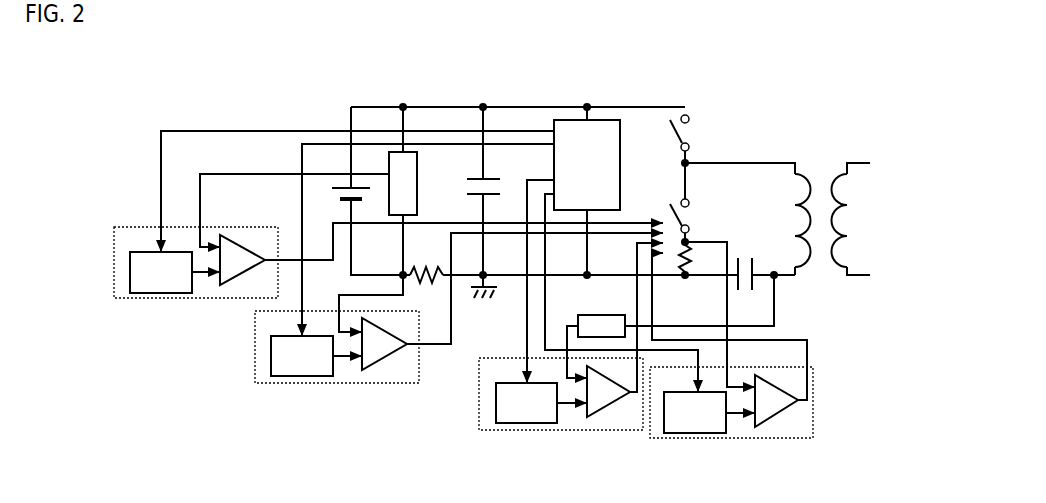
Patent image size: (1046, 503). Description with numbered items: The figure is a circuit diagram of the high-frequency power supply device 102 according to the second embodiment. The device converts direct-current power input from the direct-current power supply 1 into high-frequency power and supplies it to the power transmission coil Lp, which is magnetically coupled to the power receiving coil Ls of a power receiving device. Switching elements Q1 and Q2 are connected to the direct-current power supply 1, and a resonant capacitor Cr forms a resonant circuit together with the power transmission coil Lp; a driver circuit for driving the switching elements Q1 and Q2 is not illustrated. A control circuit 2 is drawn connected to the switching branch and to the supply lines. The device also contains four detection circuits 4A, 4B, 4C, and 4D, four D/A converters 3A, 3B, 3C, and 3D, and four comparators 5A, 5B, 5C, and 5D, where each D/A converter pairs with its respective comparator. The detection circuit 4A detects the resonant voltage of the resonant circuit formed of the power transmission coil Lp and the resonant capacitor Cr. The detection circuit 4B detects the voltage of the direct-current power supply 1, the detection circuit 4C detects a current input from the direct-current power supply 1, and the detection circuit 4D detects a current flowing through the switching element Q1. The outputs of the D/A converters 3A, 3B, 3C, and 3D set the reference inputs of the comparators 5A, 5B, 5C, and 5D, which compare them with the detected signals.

The high-frequency power supply device 102 is at (240, 53).
The direct-current power supply 1 is at (334, 198).
The control circuit 2 is at (620, 160).
The D/A converter 3A is at (527, 424).
The D/A converter 3B is at (130, 272).
The D/A converter 3C is at (271, 356).
The D/A converter 3D is at (695, 434).
The detection circuit 4A is at (596, 315).
The detection circuit 4B is at (418, 171).
The detection circuit 4C is at (420, 270).
The detection circuit 4D is at (689, 262).
The comparator 5A is at (610, 400).
The comparator 5B is at (242, 236).
The comparator 5C is at (386, 360).
The comparator 5D is at (780, 412).
The switching element Q1 is at (698, 216).
The switching element Q2 is at (698, 133).
The power transmission coil Lp is at (786, 220).
The power receiving coil Ls is at (853, 220).
The resonant capacitor Cr is at (749, 261).